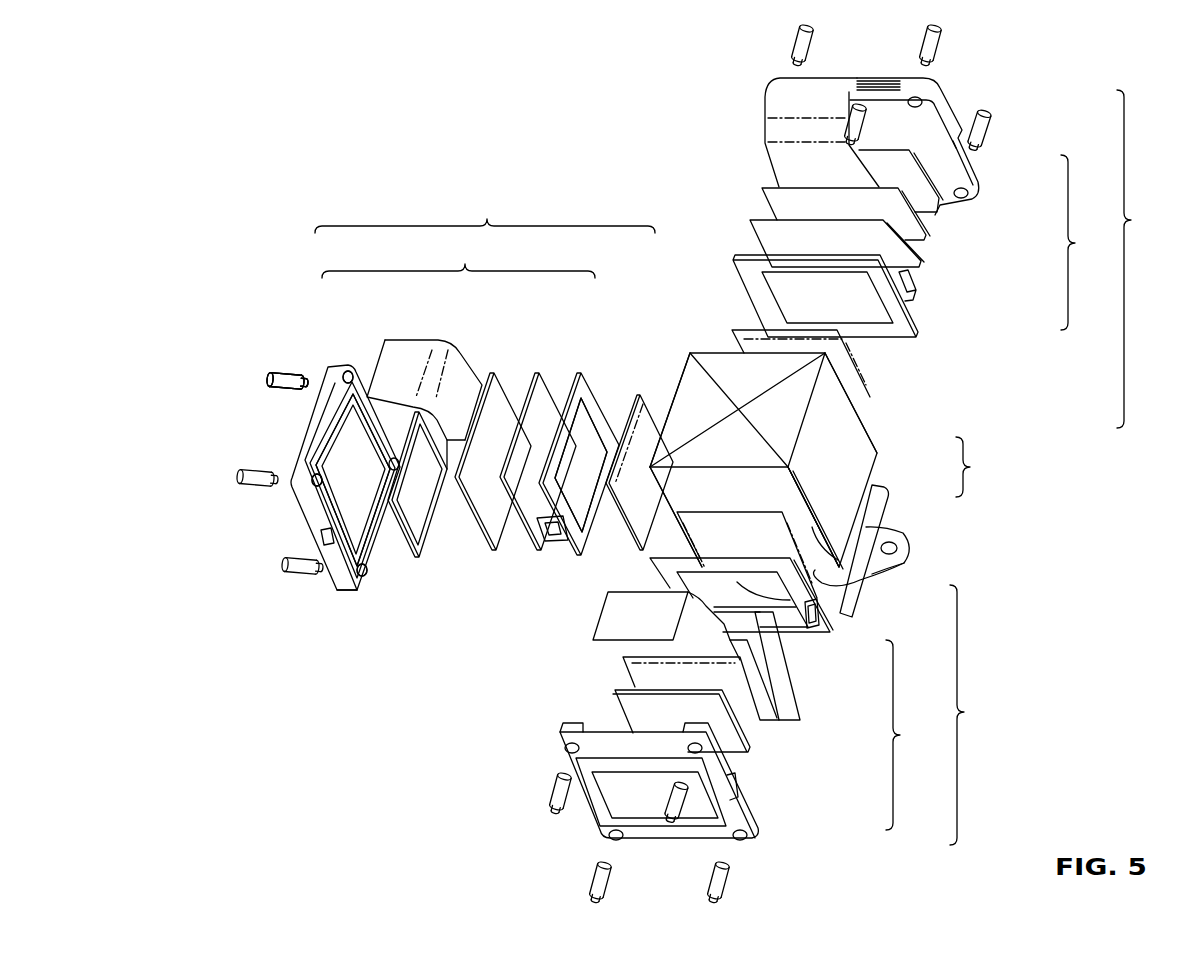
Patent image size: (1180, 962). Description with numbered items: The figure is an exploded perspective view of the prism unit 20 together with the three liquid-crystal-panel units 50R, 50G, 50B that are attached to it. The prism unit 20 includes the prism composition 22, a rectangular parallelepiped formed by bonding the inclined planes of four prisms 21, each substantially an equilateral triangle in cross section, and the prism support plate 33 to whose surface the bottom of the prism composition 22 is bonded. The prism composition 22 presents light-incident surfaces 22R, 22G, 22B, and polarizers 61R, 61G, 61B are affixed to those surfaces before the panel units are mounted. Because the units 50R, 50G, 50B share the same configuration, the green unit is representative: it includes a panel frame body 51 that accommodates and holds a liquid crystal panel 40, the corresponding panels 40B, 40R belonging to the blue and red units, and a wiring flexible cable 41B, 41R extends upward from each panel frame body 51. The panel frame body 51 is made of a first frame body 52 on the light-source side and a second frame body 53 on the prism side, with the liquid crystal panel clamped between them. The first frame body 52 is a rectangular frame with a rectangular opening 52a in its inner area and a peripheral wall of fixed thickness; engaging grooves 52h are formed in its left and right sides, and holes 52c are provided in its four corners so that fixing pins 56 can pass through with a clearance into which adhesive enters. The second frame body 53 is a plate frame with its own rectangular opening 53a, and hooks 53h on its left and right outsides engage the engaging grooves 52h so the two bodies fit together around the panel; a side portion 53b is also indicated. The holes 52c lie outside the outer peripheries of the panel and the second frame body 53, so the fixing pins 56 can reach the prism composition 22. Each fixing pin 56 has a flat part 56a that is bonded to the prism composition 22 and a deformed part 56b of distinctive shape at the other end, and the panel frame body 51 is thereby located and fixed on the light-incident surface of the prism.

The prism unit 20 is at (974, 467).
The prism 21 is at (755, 384).
The prism composition 22 is at (893, 446).
The light-incident surface 22G is at (678, 362).
The light-incident surface 22B is at (852, 419).
The light-incident surface 22R is at (843, 566).
The prism support plate 33 is at (886, 492).
The liquid crystal panel 40 is at (498, 375).
The liquid crystal panel 40B is at (919, 250).
The liquid crystal panel 40R is at (775, 736).
The wiring flexible cable 41B is at (407, 348).
The wiring flexible cable 41R is at (598, 622).
The liquid-crystal-panel unit 50G is at (485, 212).
The liquid-crystal-panel unit 50B is at (1141, 259).
The liquid-crystal-panel unit 50R is at (974, 715).
The panel frame body 51 is at (710, 492).
The first frame body 52 is at (309, 432).
The rectangular opening 52a is at (340, 493).
The hole 52c is at (349, 371).
The engaging groove 52h is at (329, 548).
The second frame body 53 is at (579, 372).
The rectangular opening 53a is at (580, 500).
The side portion of intermediate frame 53b is at (354, 592).
The hook 53h is at (556, 545).
The fixing pin 56 is at (281, 372).
The flat part 56a is at (306, 379).
The deformed part 56b is at (268, 382).
The polarizer 61G is at (639, 392).
The polarizer 61B is at (856, 361).
The polarizer 61R is at (813, 612).